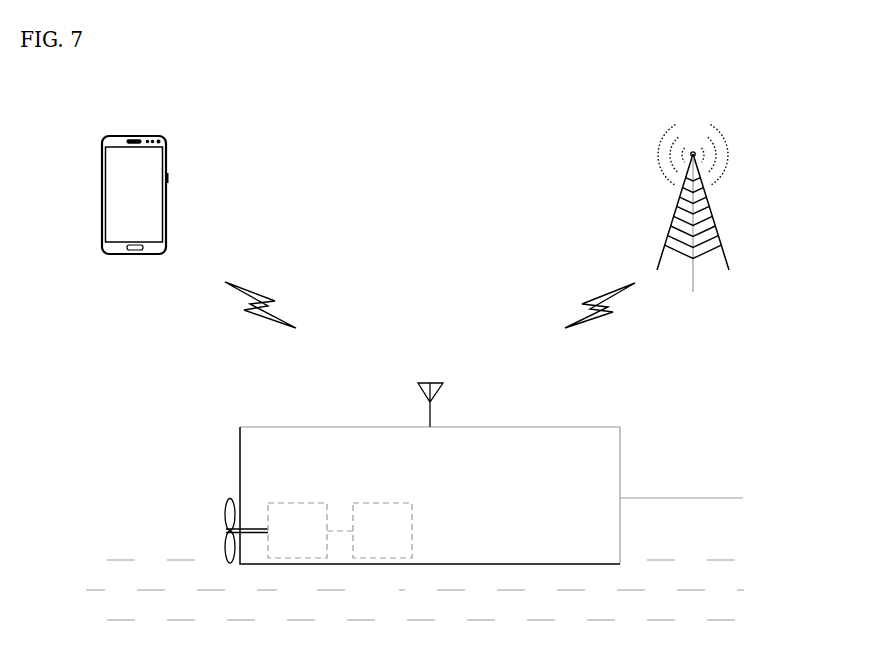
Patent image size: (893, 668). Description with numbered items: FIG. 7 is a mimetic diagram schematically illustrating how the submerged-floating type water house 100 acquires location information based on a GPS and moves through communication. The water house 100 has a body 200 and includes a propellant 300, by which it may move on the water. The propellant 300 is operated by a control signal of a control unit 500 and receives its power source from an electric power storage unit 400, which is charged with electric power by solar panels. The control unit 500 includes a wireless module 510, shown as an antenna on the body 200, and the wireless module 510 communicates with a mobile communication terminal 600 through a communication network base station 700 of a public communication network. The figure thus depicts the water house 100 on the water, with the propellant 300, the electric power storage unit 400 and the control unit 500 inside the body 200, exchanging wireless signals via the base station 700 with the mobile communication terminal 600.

The submerged-floating type water house 100 is at (663, 485).
The body 200 is at (590, 421).
The propellant 300 is at (230, 500).
The electric power storage unit 400 is at (298, 555).
The control unit 500 is at (383, 555).
The wireless module 510 is at (445, 383).
The mobile communication terminal 600 is at (105, 138).
The communication network base station 700 is at (715, 220).